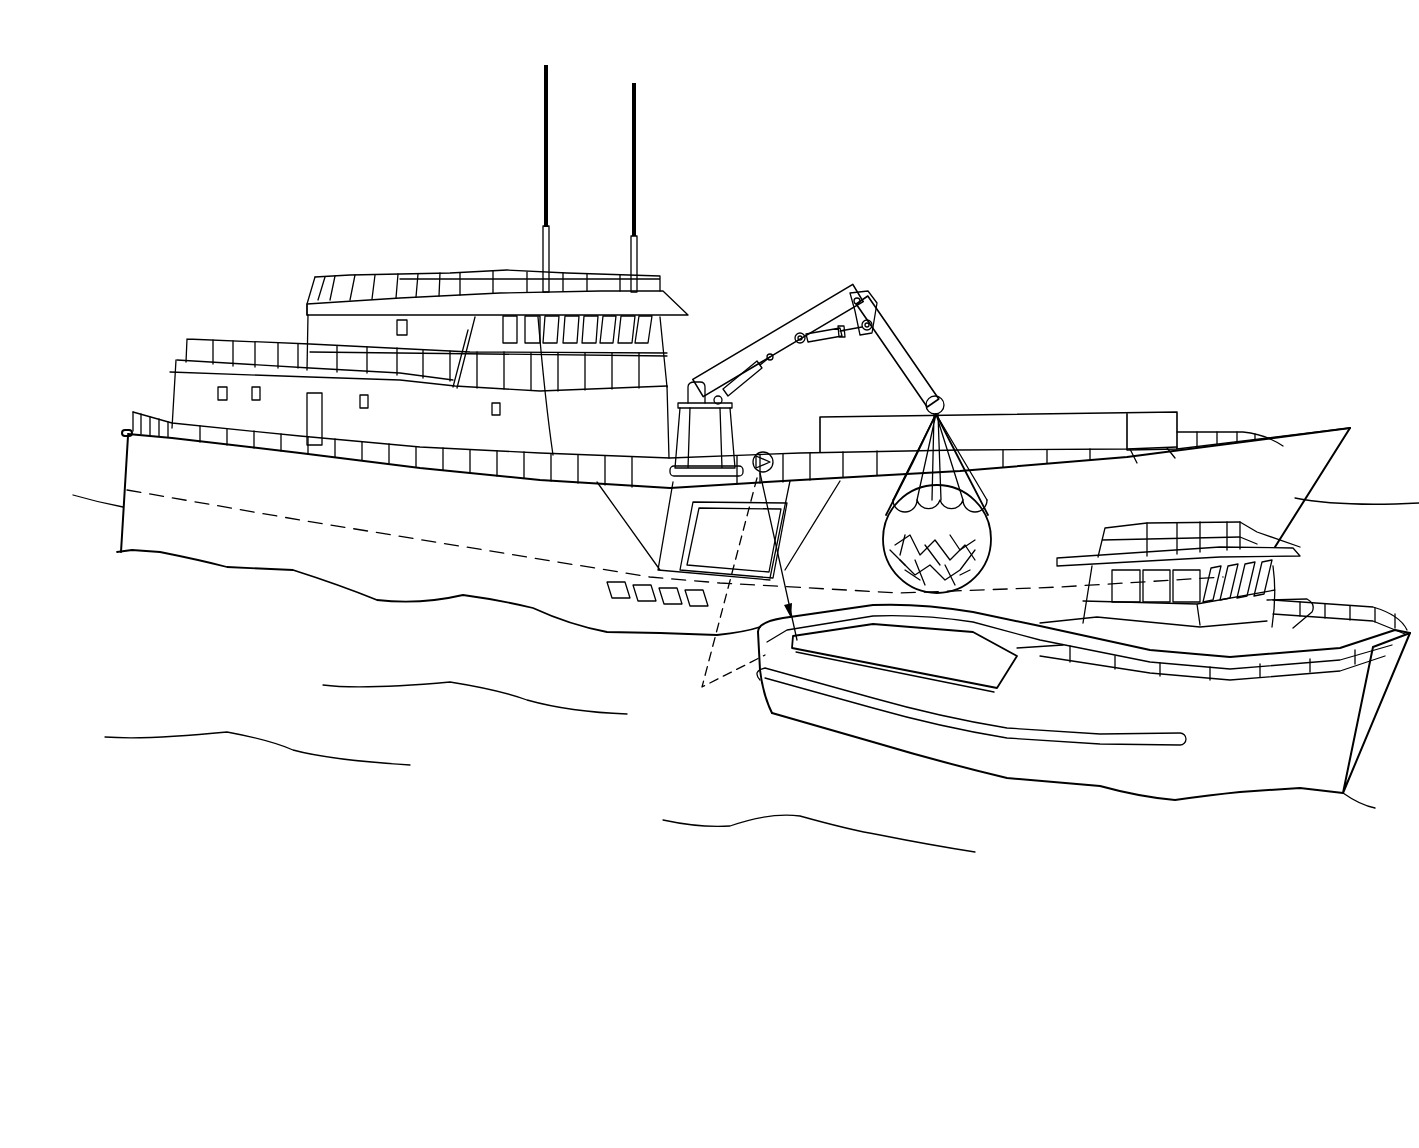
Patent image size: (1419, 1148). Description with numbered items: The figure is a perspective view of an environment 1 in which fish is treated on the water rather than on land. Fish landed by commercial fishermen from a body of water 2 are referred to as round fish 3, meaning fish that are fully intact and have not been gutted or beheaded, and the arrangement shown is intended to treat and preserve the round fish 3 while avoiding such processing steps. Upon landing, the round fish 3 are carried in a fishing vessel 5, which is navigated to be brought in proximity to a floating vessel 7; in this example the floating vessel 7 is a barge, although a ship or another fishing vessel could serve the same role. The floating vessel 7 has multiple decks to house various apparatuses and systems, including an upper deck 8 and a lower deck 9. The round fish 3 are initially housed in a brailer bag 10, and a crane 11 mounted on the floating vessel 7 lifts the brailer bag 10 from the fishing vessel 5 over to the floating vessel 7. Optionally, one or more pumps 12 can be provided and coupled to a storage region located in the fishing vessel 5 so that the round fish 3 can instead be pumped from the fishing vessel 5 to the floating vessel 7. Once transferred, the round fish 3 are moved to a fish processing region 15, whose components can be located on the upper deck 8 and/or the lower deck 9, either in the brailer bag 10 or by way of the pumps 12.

The environment 1 is at (1283, 263).
The body of water 2 is at (237, 686).
The round fish 3 is at (987, 540).
The fishing vessel 5 is at (1348, 567).
The floating vessel 7 is at (100, 468).
The upper deck 8 is at (1243, 428).
The lower deck 9 is at (143, 478).
The brailer bag 10 is at (883, 514).
The crane 11 is at (776, 333).
The pumps 12 is at (768, 452).
The fish processing region 15 is at (1083, 432).